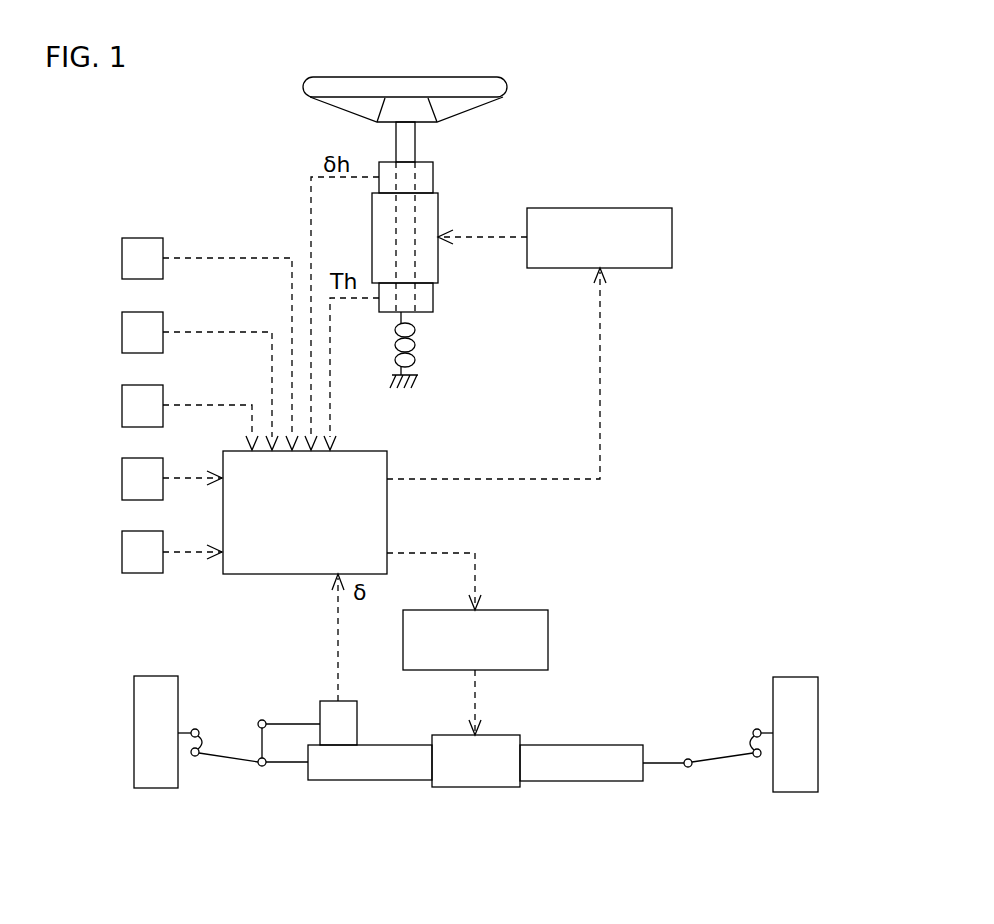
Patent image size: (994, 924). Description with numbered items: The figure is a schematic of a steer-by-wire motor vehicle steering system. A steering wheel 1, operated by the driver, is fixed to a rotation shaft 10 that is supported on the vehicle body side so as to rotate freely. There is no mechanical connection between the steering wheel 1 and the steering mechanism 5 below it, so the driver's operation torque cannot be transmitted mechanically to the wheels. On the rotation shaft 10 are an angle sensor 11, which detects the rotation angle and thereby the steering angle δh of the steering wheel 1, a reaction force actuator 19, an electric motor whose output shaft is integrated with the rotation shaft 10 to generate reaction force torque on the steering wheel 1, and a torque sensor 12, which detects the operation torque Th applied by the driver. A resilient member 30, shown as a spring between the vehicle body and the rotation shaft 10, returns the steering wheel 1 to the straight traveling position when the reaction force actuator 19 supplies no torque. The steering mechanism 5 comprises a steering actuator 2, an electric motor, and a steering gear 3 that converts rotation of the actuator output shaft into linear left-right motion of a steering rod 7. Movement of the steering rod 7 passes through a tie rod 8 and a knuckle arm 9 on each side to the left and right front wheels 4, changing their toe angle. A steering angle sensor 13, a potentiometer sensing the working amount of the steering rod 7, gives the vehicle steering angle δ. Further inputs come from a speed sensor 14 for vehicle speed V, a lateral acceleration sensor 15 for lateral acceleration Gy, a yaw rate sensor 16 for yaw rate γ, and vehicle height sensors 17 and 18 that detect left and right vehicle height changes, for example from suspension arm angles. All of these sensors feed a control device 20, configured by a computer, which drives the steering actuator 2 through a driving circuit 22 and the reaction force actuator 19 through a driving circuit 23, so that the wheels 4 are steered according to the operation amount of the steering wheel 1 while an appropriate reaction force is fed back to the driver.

The steering wheel 1 is at (500, 88).
The rotation shaft 10 is at (412, 145).
The angle sensor 11 is at (403, 178).
The reaction force actuator 19 is at (418, 207).
The torque sensor 12 is at (425, 298).
The resilient member 30 is at (417, 345).
The driving circuit 23 is at (662, 208).
The vehicle height sensor 17 is at (122, 260).
The vehicle height sensor 18 is at (122, 334).
The lateral acceleration sensor 15 is at (122, 407).
The yaw rate sensor 16 is at (122, 480).
The speed sensor 14 is at (122, 554).
The control device 20 is at (377, 460).
The driving circuit 22 is at (540, 612).
The steering angle sensor 13 is at (348, 720).
The steering gear 3 is at (365, 771).
The steering actuator 2 is at (478, 781).
The steering rod 7 is at (287, 766).
The tie rod 8 is at (228, 764).
The knuckle arm 9 is at (203, 740).
The front wheel 4 is at (163, 787).
The steering mechanism 5 is at (476, 730).